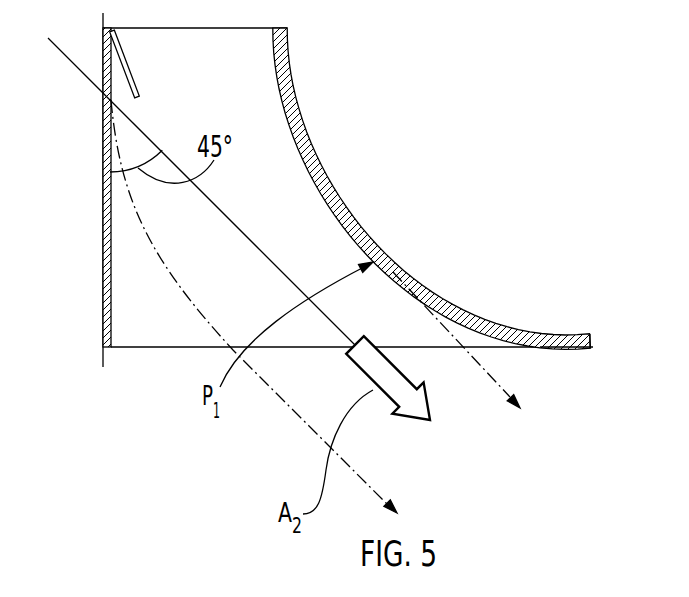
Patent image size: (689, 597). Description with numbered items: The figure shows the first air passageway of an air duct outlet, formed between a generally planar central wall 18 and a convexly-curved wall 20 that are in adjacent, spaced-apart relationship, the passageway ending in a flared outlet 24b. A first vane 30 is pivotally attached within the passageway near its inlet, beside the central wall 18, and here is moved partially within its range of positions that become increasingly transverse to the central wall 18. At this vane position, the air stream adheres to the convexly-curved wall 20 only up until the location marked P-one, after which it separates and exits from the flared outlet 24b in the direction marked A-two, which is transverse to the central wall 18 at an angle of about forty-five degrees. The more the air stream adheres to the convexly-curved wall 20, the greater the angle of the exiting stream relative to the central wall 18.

The central wall 18 is at (103, 250).
The convexly-curved wall 20 is at (300, 128).
The flared outlet 24b is at (530, 347).
The first vane 30 is at (134, 72).